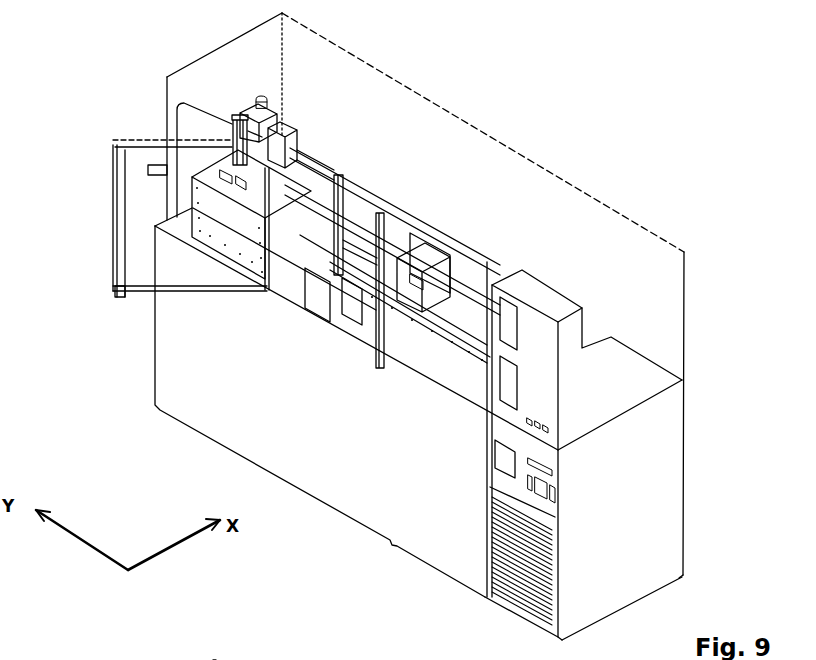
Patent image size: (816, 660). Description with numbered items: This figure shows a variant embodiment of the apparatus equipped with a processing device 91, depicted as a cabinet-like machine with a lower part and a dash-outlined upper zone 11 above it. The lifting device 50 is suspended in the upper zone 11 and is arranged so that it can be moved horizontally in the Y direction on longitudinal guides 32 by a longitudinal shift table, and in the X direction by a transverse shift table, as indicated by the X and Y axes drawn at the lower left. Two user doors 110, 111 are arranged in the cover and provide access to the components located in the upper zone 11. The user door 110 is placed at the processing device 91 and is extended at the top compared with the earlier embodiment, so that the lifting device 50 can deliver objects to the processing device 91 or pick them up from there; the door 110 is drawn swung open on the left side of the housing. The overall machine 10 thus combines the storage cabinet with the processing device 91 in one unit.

The machine 10 is at (115, 367).
The upper zone 11 is at (128, 96).
The user door 110 is at (112, 213).
The user door 111 is at (377, 343).
The processing device 91 is at (288, 128).
The lifting device 50 is at (354, 204).
The longitudinal guides 32 is at (213, 659).